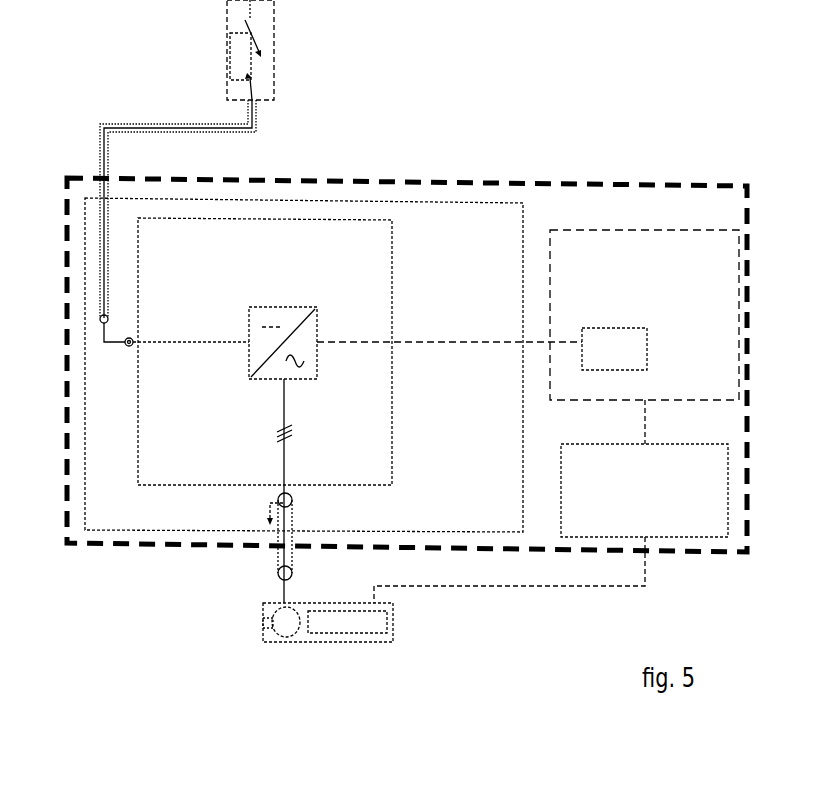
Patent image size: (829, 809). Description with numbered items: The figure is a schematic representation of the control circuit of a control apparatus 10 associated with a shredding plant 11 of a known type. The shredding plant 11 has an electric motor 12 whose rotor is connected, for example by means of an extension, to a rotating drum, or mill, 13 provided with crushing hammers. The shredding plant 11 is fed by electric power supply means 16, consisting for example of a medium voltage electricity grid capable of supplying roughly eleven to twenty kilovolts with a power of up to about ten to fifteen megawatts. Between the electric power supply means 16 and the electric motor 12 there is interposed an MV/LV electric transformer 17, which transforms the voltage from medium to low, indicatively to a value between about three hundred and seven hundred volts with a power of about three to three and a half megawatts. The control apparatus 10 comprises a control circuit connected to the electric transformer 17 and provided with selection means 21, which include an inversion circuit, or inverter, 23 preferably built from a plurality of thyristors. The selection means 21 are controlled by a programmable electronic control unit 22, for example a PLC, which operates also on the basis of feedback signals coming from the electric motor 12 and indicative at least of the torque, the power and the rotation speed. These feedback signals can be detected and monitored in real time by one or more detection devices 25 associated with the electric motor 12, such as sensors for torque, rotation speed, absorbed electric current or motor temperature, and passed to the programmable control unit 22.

The control apparatus 10 is at (598, 131).
The shredding plant 11 is at (388, 644).
The electric motor 12 is at (290, 630).
The rotating drum 13 is at (351, 628).
The electric power supply means 16 is at (157, 120).
The MV/LV electric transformer 17 is at (96, 359).
The selection means 21 is at (498, 198).
The programmable electronic control unit 22 is at (624, 228).
The inverter 23 is at (295, 302).
The detection devices 25 is at (656, 506).